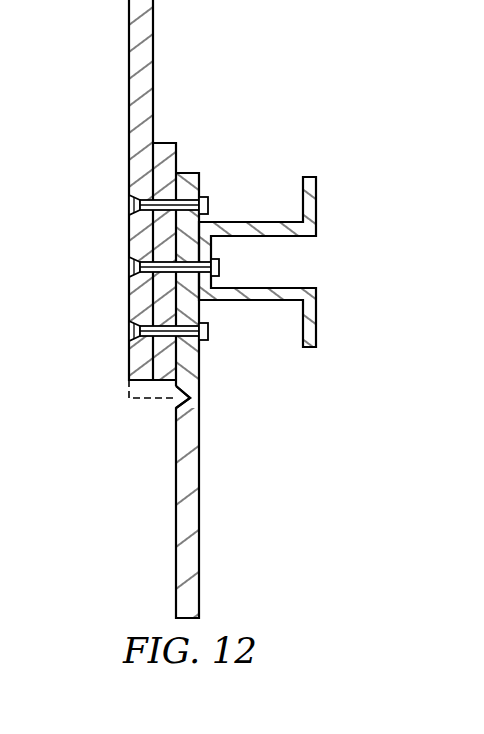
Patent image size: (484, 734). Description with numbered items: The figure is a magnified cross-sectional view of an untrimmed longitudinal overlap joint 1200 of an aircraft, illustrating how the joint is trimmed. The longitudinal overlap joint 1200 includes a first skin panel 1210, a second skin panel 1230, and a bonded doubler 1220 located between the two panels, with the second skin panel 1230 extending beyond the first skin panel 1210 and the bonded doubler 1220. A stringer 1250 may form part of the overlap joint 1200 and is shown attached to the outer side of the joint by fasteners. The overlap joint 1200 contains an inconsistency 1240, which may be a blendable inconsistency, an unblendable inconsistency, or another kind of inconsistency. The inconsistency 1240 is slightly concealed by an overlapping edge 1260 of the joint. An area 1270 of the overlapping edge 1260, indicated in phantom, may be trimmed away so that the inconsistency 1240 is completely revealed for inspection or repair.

The longitudinal overlap joint 1200 is at (251, 64).
The first skin panel 1210 is at (129, 126).
The bonded doubler 1220 is at (170, 143).
The second skin panel 1230 is at (199, 505).
The inconsistency 1240 is at (189, 398).
The stringer 1250 is at (252, 222).
The overlapping edge 1260 is at (160, 378).
The area 1270 is at (150, 393).